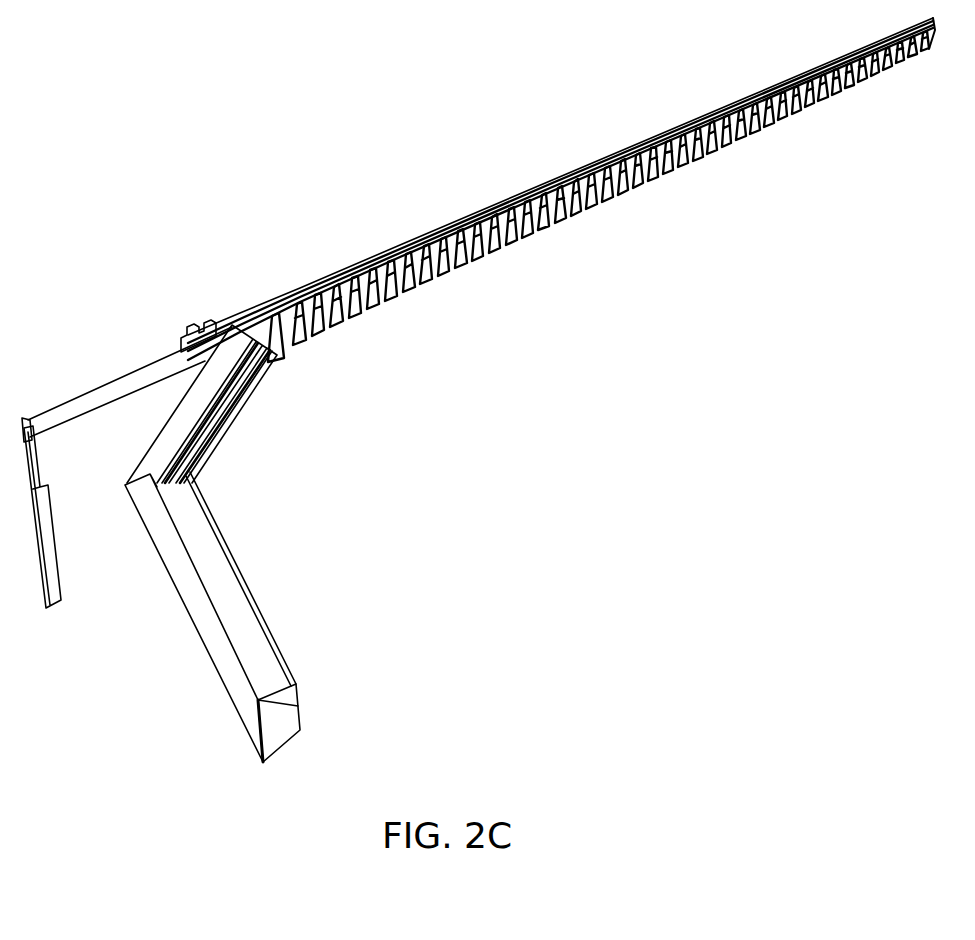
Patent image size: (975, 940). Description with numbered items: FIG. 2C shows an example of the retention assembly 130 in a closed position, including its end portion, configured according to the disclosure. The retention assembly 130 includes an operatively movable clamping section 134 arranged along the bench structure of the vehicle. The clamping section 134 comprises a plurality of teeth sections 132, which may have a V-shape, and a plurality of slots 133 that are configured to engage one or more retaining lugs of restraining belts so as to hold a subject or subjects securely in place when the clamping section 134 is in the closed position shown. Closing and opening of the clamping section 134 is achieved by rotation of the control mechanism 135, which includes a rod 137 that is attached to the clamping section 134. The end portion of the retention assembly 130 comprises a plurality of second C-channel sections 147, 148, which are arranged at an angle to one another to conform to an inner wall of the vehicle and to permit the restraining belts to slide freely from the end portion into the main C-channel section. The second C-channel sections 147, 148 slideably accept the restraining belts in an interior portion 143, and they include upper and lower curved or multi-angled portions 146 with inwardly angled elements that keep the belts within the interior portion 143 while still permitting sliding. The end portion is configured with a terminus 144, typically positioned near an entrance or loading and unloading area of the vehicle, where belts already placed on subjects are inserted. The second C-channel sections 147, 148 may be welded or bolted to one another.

The retention assembly 130 is at (478, 415).
The teeth sections 132 is at (570, 220).
The slots 133 is at (682, 163).
The operatively movable clamping section 134 is at (466, 222).
The control mechanism 135 is at (50, 530).
The rod 137 is at (97, 398).
The interior portion 143 is at (275, 740).
The terminus 144 is at (301, 731).
The upper and lower curved or multi-angled portions 146 is at (296, 686).
The second C-channel section 147 is at (247, 642).
The second C-channel section 148 is at (215, 445).